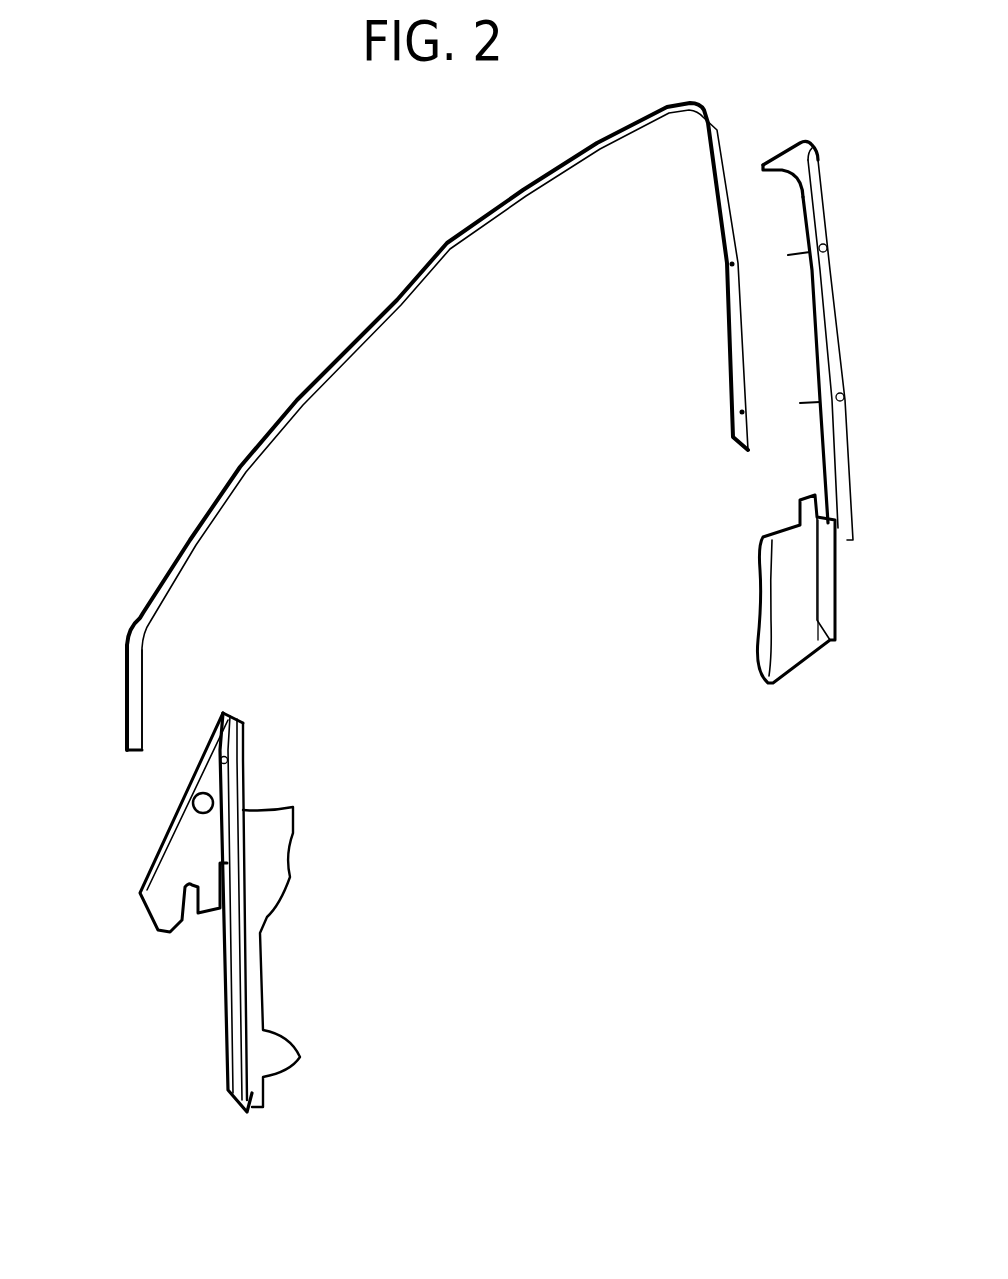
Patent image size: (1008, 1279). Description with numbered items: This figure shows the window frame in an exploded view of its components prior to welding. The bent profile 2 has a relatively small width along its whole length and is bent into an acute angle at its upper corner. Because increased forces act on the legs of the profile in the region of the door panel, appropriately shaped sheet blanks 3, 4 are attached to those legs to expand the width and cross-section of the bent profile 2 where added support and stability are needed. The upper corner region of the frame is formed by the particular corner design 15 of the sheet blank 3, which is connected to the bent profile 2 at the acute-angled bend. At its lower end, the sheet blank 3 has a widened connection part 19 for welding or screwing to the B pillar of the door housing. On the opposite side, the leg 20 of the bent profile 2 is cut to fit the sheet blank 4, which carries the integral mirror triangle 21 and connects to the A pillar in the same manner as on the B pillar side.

The bent profile 2 is at (318, 333).
The leg 20 is at (128, 707).
The corner design 15 is at (820, 160).
The sheet blank 3 is at (847, 485).
The widened connection part 19 is at (765, 598).
The mirror triangle 21 is at (175, 853).
The sheet blank 4 is at (258, 987).